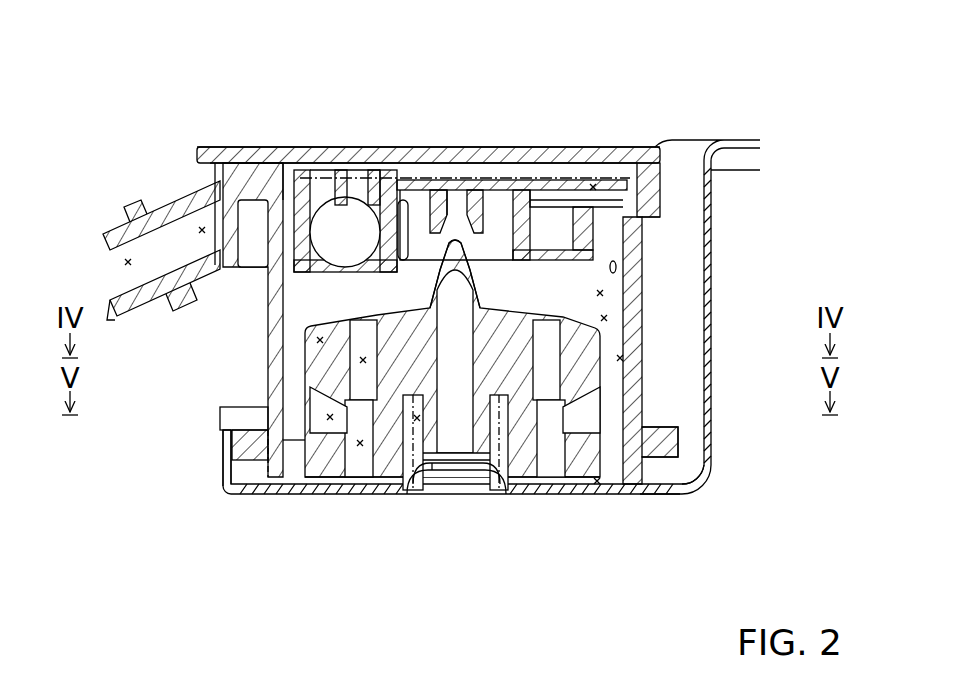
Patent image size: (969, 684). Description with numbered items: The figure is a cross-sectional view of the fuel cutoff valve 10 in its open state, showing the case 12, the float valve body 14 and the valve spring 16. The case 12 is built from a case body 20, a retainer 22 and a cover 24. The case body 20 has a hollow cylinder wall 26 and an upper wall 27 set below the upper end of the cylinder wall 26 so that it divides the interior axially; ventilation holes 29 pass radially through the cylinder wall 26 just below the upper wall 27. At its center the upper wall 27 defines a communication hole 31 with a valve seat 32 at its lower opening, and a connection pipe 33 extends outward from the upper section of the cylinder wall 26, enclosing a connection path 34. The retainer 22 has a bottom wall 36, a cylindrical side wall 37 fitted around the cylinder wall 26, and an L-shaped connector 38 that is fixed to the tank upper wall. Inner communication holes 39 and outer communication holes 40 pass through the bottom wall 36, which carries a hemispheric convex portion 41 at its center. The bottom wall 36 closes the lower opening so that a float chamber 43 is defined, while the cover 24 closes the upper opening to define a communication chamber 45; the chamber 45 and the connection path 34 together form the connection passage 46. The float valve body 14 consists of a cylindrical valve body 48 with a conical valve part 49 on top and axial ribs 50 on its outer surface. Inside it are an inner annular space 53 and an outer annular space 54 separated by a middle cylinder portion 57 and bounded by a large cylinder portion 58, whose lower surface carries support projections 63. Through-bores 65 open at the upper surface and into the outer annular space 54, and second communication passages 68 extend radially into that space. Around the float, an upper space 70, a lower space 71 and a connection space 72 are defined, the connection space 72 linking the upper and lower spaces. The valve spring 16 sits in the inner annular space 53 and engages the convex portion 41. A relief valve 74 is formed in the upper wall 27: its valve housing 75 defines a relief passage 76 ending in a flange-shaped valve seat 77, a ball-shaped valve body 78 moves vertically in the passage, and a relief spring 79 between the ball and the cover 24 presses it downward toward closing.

The fuel cutoff valve 10 is at (663, 73).
The case 12 is at (598, 106).
The float valve body 14 is at (666, 440).
The valve spring 16 is at (432, 463).
The case body 20 is at (655, 283).
The retainer 22 is at (700, 497).
The cover 24 is at (538, 147).
The cylinder wall 26 is at (275, 350).
The upper wall 27 is at (490, 190).
The ventilation holes 29 is at (702, 248).
The communication hole 31 is at (458, 200).
The valve seat 32 is at (462, 150).
The connection pipe 33 is at (178, 210).
The connection path 34 is at (128, 262).
The bottom wall 36 is at (657, 500).
The side wall 37 is at (225, 470).
The connector 38 is at (755, 140).
The inner communication holes 39 is at (518, 500).
The outer communication holes 40 is at (580, 500).
The convex portion 41 is at (467, 500).
The float chamber 43 is at (604, 318).
The communication chamber 45 is at (594, 186).
The connection passage 46 is at (201, 228).
The valve body 48 is at (325, 342).
The valve part 49 is at (478, 268).
The ribs 50 is at (236, 490).
The inner annular space 53 is at (420, 418).
The outer annular space 54 is at (358, 500).
The middle cylinder portion 57 is at (392, 500).
The large cylinder portion 58 is at (300, 462).
The support projections 63 is at (327, 500).
The through-bores 65 is at (362, 360).
The second communication passages 68 is at (330, 417).
The upper space 70 is at (600, 294).
The lower space 71 is at (595, 500).
The connection space 72 is at (620, 358).
The relief valve 74 is at (345, 175).
The valve housing 75 is at (330, 222).
The relief passage 76 is at (385, 172).
The valve seat 77 is at (295, 283).
The valve body 78 is at (262, 178).
The relief spring 79 is at (310, 148).